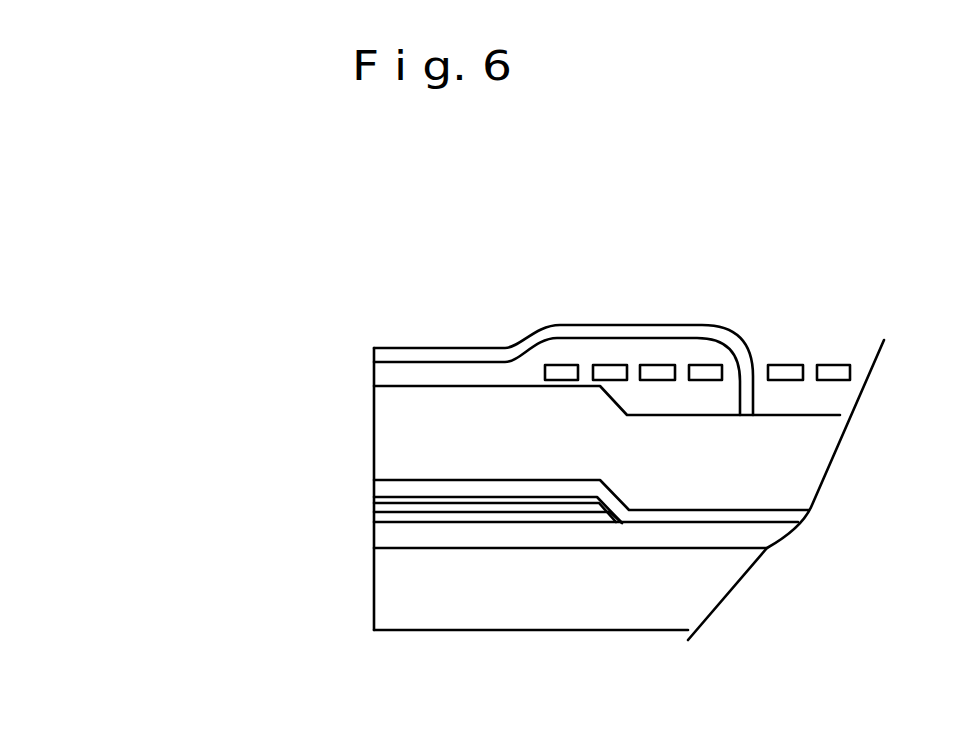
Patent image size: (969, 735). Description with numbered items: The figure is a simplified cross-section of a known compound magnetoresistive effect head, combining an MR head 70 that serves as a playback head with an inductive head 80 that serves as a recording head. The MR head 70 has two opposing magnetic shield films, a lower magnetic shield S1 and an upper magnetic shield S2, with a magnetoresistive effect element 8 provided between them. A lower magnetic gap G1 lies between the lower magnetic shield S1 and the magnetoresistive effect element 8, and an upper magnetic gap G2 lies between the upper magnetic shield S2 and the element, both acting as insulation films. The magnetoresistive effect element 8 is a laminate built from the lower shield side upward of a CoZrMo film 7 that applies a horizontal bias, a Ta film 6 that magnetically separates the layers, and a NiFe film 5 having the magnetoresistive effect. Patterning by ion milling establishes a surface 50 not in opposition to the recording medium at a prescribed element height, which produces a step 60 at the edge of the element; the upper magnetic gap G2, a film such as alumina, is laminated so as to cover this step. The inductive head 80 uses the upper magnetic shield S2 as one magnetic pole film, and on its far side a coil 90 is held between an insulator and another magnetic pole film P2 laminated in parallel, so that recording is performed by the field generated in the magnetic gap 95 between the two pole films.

The inductive head 80 is at (98, 335).
The magnetic gap 95 is at (390, 375).
The upper magnetic shield S2 is at (407, 427).
The magnetic pole film P2 is at (433, 352).
The coil 90 is at (712, 366).
The MR head 70 is at (97, 440).
The upper magnetic gap G2 is at (388, 487).
The magnetoresistive effect element 8 is at (138, 447).
The NiFe film 5 is at (385, 500).
The Ta film 6 is at (385, 507).
The CoZrMo film 7 is at (385, 518).
The lower magnetic gap G1 is at (425, 540).
The step 60 is at (610, 490).
The surface 50 is at (615, 507).
The lower magnetic shield S1 is at (477, 613).